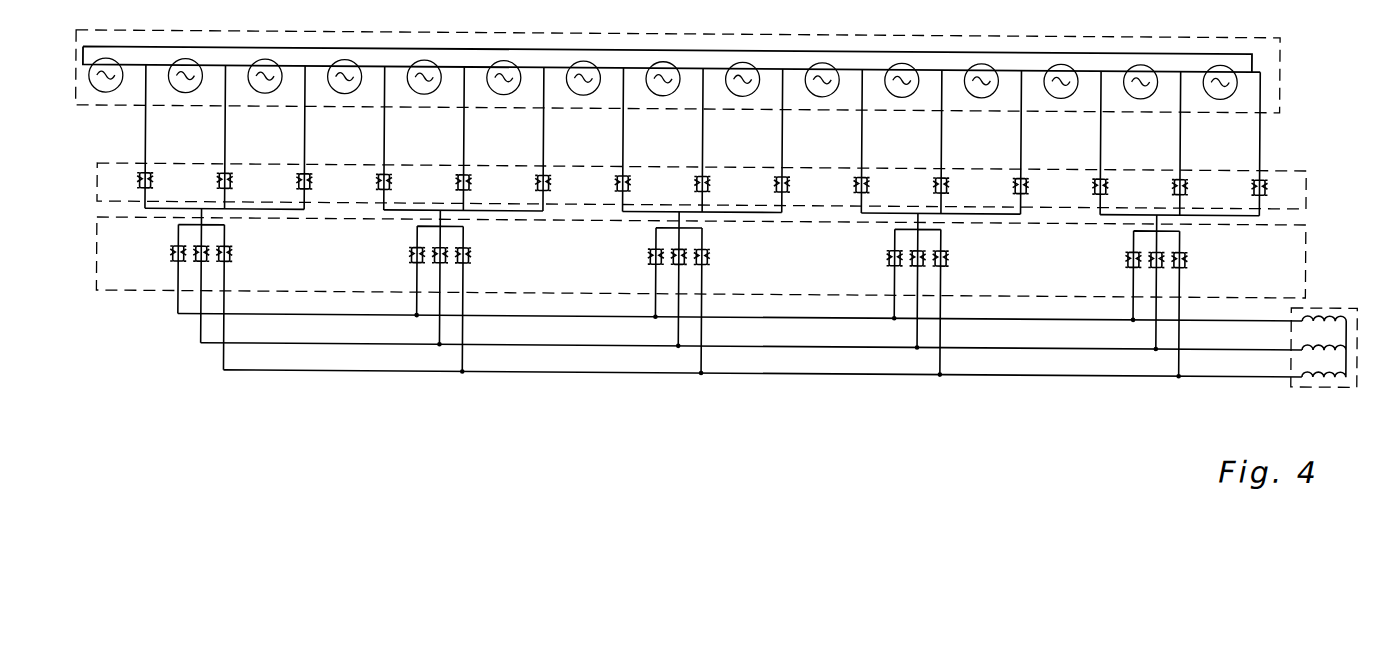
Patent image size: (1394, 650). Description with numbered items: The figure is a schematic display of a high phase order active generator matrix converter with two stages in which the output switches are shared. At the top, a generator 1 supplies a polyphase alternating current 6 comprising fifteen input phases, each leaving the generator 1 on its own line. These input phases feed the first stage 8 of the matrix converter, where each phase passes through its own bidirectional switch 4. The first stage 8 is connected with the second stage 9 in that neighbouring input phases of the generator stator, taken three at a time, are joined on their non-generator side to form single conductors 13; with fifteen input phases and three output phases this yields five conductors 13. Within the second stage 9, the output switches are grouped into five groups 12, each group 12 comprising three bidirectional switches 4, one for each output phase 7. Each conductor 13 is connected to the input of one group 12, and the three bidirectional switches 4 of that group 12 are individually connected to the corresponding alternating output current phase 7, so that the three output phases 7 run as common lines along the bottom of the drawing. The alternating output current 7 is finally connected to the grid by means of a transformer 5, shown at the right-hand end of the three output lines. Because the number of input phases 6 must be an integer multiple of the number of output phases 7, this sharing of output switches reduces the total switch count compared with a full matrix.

The generator 1 is at (1282, 54).
The polyphase alternating current 6 is at (147, 131).
The first stage 8 is at (1306, 186).
The second stage 9 is at (1306, 254).
The single conductor 13 is at (202, 212).
The group 12 is at (214, 271).
The bidirectional switch 4 is at (170, 252).
The alternating output current phase 7 is at (230, 315).
The transformer 5 is at (1297, 380).